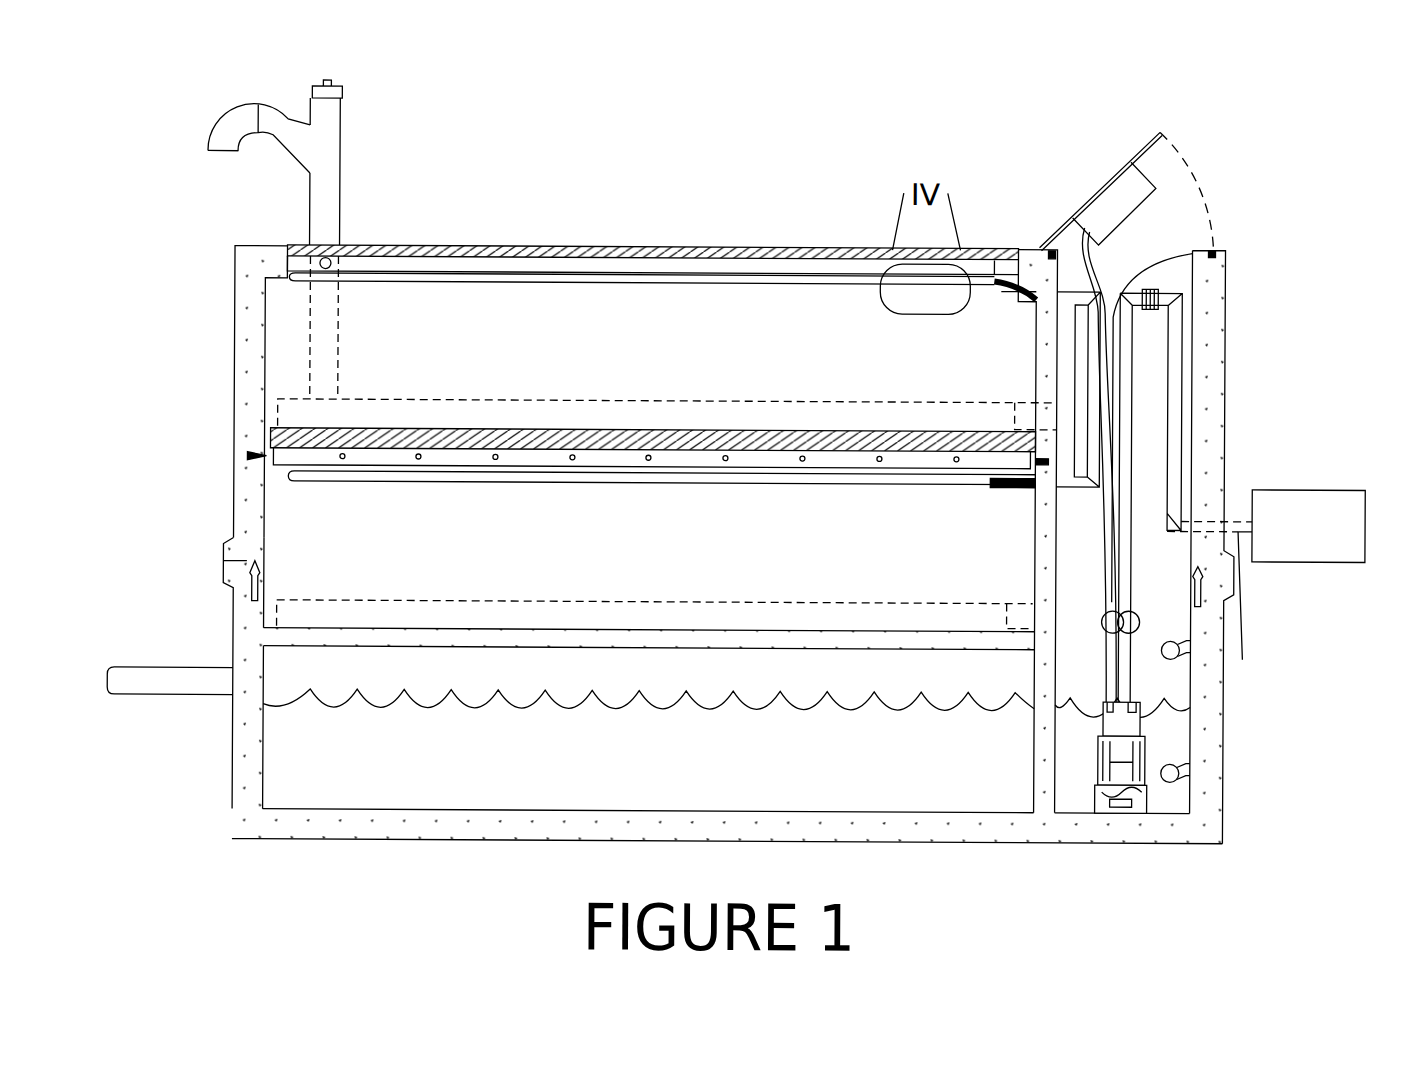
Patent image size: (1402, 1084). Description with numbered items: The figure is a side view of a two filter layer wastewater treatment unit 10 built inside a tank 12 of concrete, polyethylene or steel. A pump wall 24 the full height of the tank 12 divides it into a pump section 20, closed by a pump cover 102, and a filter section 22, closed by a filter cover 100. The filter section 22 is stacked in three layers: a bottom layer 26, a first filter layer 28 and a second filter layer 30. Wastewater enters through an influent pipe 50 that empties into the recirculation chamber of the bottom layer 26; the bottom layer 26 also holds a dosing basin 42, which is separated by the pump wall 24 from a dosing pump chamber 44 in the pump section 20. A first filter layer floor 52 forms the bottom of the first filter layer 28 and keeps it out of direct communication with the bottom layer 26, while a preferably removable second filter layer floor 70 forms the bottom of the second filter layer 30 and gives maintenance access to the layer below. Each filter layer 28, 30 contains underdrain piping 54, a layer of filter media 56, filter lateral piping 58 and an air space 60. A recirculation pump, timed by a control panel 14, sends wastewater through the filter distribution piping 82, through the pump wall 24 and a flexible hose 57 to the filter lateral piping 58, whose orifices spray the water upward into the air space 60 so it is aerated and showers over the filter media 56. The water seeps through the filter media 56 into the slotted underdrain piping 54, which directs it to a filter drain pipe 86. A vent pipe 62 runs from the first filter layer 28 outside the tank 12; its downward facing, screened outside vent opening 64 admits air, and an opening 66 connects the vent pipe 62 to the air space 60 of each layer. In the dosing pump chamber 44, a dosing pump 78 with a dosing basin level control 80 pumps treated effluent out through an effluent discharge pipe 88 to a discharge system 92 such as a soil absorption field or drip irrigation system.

The wastewater treatment unit 10 is at (676, 210).
The tank 12 is at (416, 846).
The control panel 14 is at (1141, 196).
The pump section 20 is at (1120, 138).
The filter section 22 is at (560, 210).
The pump wall 24 is at (1035, 677).
The bottom layer 26 is at (218, 795).
The first filter layer 28 is at (215, 530).
The second filter layer 30 is at (220, 366).
The dosing basin 42 is at (626, 681).
The dosing pump chamber 44 is at (1173, 580).
The influent pipe 50 is at (195, 678).
The first filter layer floor 52 is at (317, 641).
The underdrain piping 54 is at (754, 411).
The filter media 56 is at (666, 369).
The flexible hose 57 is at (1013, 296).
The filter lateral piping 58 is at (711, 280).
The air space 60 is at (657, 278).
The vent pipe 62 is at (211, 115).
The outside vent opening 64 is at (220, 156).
The opening 66 is at (330, 265).
The second filter layer floor 70 is at (282, 439).
The dosing pump 78 is at (1121, 802).
The dosing basin level control 80 is at (1178, 653).
The filter distribution piping 82 is at (1085, 482).
The filter drain pipe 86 is at (1135, 631).
The effluent discharge pipe 88 is at (1243, 657).
The discharge system 92 is at (1322, 487).
The filter cover 100 is at (400, 247).
The pump cover 102 is at (1088, 196).